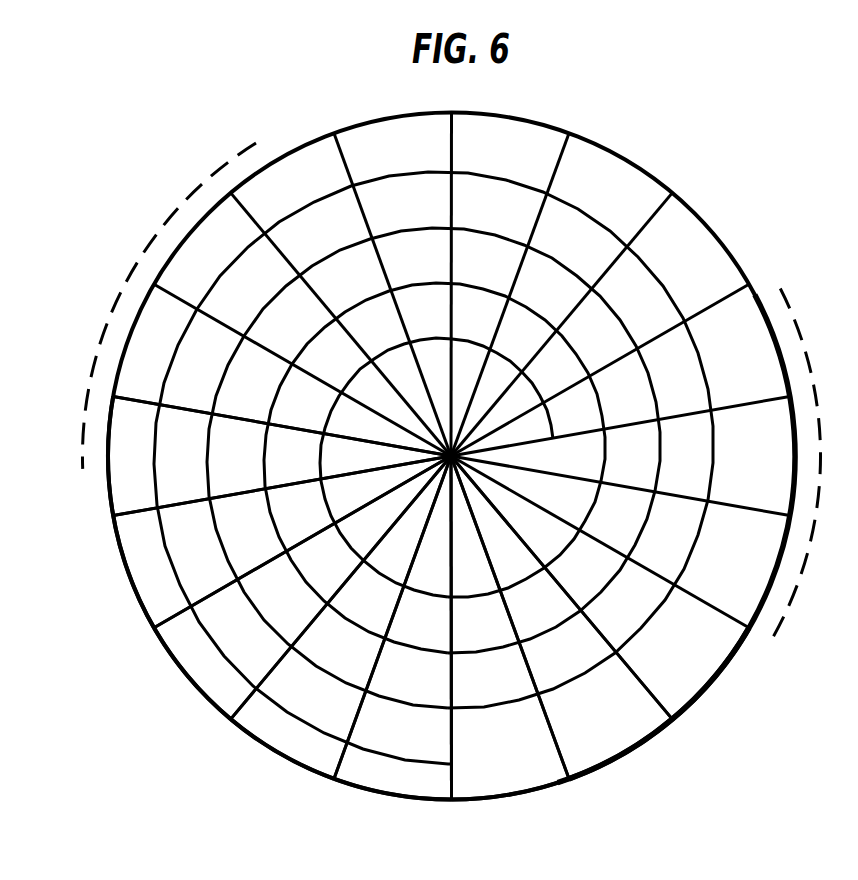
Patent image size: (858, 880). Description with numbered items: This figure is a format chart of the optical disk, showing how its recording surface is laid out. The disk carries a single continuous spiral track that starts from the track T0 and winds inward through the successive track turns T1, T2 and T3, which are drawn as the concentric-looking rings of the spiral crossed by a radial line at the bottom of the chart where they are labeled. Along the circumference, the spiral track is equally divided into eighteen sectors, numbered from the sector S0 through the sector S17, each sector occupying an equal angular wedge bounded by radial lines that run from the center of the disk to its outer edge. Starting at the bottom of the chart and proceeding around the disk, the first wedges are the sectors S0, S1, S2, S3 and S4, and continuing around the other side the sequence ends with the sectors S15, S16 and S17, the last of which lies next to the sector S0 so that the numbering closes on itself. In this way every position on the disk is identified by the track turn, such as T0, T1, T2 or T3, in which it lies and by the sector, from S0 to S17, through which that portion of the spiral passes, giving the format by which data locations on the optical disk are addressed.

The sector S0 is at (393, 648).
The sector S1 is at (341, 626).
The sector S2 is at (298, 587).
The sector S3 is at (268, 542).
The sector S4 is at (255, 455).
The sector S15 is at (610, 589).
The sector S16 is at (561, 627).
The sector S17 is at (510, 648).
The track T0 is at (433, 468).
The track T1 is at (433, 468).
The track T2 is at (434, 468).
The track T3 is at (437, 503).